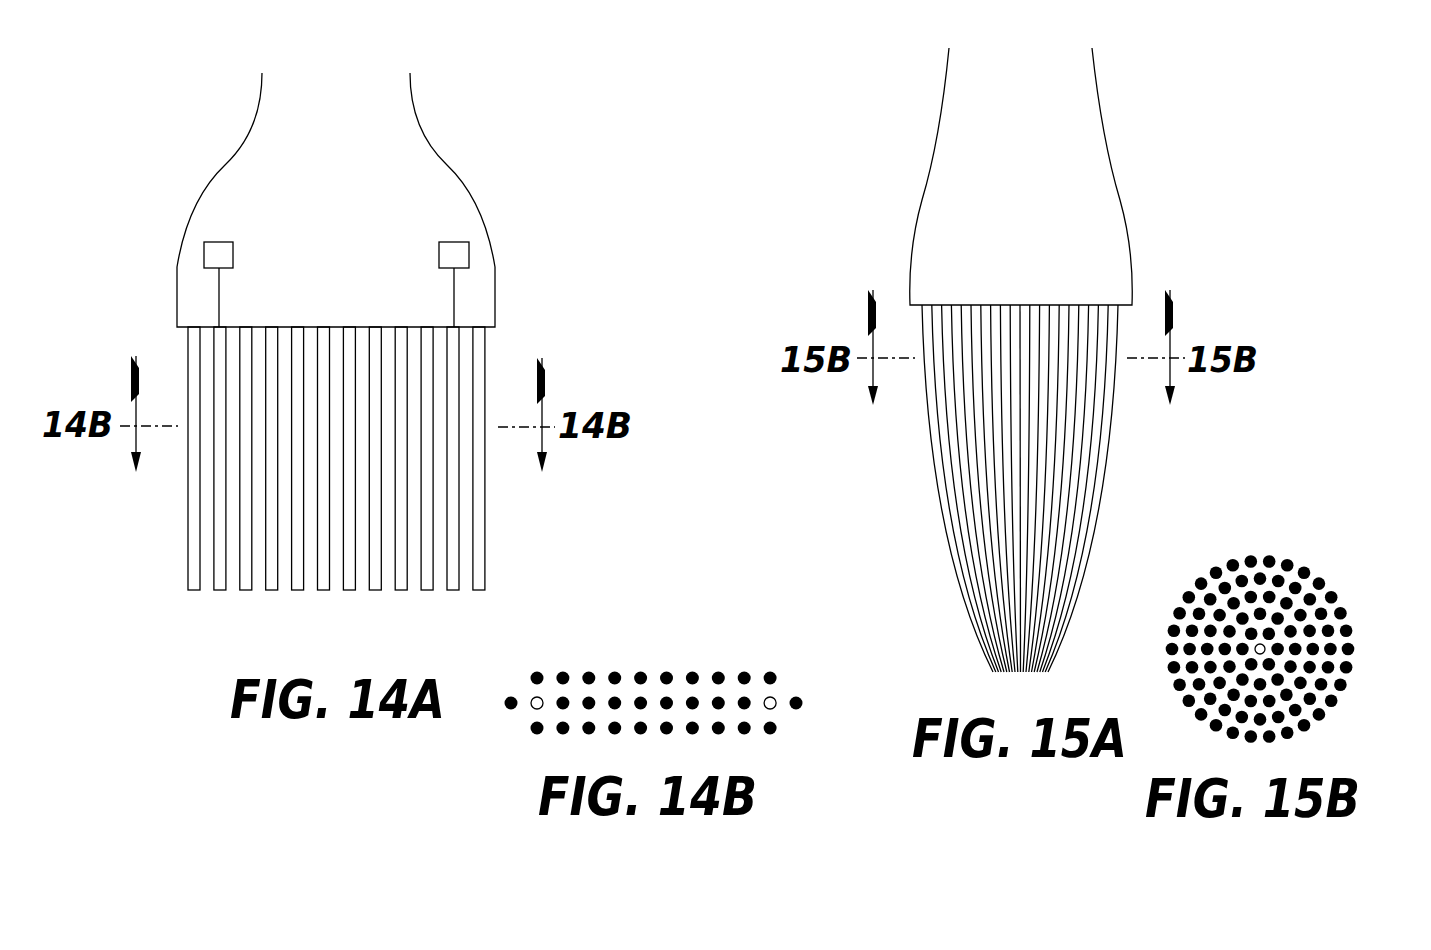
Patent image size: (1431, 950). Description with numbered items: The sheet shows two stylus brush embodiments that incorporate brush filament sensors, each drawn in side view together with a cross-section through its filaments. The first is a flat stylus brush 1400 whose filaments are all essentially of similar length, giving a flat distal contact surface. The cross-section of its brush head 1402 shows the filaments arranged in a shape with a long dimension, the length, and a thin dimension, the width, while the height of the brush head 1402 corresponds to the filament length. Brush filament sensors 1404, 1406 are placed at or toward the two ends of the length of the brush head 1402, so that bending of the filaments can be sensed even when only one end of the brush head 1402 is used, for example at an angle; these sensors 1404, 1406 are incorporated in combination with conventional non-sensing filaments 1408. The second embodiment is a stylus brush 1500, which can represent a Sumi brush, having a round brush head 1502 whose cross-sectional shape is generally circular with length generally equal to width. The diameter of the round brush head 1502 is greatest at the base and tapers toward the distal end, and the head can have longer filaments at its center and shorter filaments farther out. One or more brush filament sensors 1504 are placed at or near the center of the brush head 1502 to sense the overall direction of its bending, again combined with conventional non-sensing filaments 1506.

In FIG. 14A, the flat stylus brush 1400 is at (486, 149).
In FIG. 14A, the brush head 1402 is at (495, 496).
In FIG. 14B, the brush head 1402 is at (748, 632).
In FIG. 14B, the brush filament sensor 1404 is at (535, 697).
In FIG. 14B, the brush filament sensor 1406 is at (771, 697).
In FIG. 14B, the non-sensing filament 1408 is at (667, 672).
In FIG. 15A, the stylus brush 1500 is at (1121, 152).
In FIG. 15A, the round brush head 1502 is at (1112, 495).
In FIG. 15B, the round brush head 1502 is at (1328, 562).
In FIG. 15B, the brush filament sensor 1504 is at (1265, 647).
In FIG. 15B, the non-sensing filament 1506 is at (1334, 597).